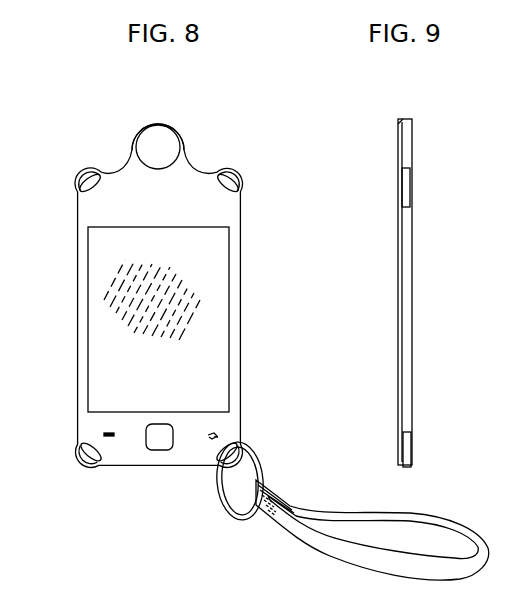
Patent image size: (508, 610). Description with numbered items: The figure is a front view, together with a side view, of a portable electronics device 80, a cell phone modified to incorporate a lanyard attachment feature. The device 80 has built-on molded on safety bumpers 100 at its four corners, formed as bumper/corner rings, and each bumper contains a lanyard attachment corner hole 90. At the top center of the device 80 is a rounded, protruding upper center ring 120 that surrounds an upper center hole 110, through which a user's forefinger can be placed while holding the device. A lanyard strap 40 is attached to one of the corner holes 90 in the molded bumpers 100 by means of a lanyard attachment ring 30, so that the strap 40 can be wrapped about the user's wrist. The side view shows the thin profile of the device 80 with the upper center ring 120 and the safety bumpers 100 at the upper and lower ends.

In FIG. 8, the lanyard attachment ring 30 is at (216, 496).
In FIG. 8, the lanyard strap 40 is at (372, 536).
In FIG. 8, the portable electronics device 80 is at (266, 129).
In FIG. 9, the portable electronics device 80 is at (446, 128).
In FIG. 8, the lanyard attachment corner holes 90 is at (166, 329).
In FIG. 8, the molded on safety bumpers 100 is at (172, 329).
In FIG. 9, the molded on safety bumpers 100 is at (440, 331).
In FIG. 8, the upper center hole 110 is at (182, 132).
In FIG. 8, the protruding upper center ring 120 is at (133, 123).
In FIG. 9, the protruding upper center ring 120 is at (374, 112).